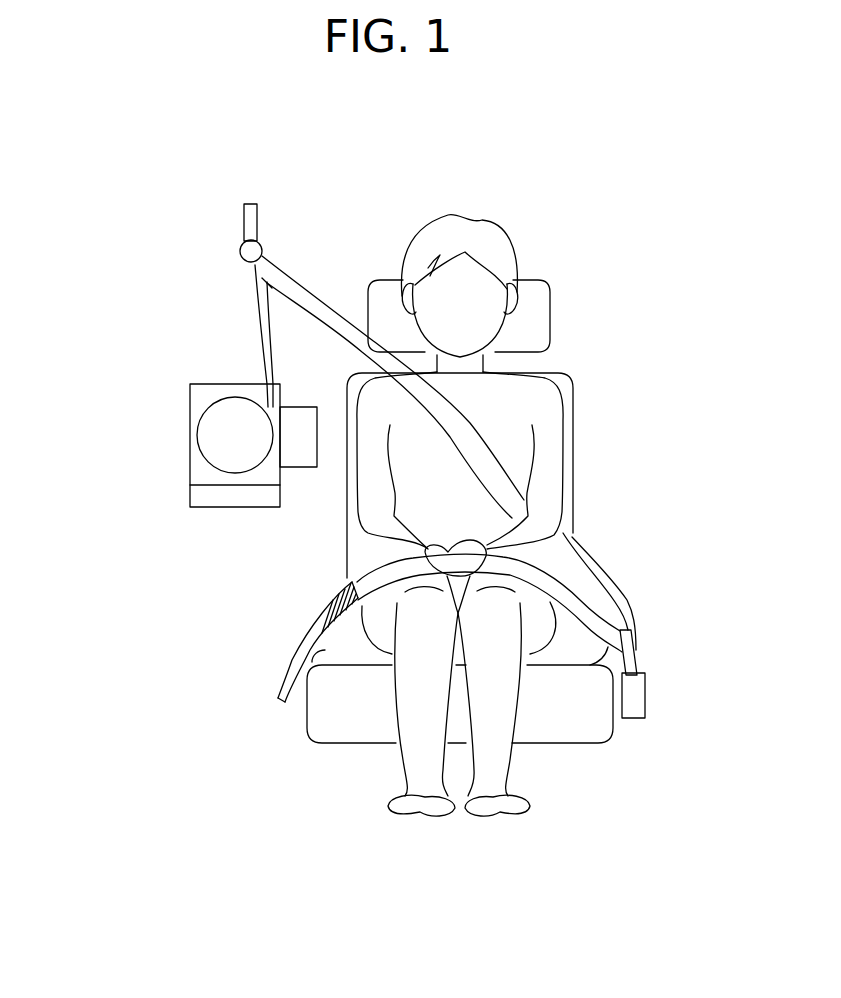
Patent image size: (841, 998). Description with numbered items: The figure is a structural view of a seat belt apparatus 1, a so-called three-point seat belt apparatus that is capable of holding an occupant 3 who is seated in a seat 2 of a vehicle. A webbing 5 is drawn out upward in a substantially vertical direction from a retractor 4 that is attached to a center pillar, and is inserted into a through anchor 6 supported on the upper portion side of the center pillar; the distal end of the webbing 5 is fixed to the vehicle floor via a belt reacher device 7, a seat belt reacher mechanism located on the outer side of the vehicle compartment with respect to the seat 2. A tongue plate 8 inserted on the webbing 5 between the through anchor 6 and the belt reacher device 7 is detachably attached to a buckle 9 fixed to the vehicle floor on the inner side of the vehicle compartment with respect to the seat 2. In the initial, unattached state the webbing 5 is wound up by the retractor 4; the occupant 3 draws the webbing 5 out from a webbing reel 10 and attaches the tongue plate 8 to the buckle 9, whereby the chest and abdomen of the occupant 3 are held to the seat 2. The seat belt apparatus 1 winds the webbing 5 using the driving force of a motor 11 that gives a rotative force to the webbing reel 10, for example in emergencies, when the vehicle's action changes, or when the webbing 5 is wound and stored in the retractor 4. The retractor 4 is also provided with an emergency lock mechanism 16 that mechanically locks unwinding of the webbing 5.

The seat belt apparatus 1 is at (296, 224).
The seat 2 is at (570, 720).
The occupant 3 is at (503, 230).
The retractor 4 is at (240, 385).
The webbing 5 is at (597, 580).
The through anchor 6 is at (253, 268).
The belt reacher device 7 is at (285, 650).
The tongue plate 8 is at (634, 660).
The buckle 9 is at (634, 695).
The webbing reel 10 is at (217, 441).
The motor 11 is at (263, 493).
The emergency lock mechanism 16 is at (300, 450).